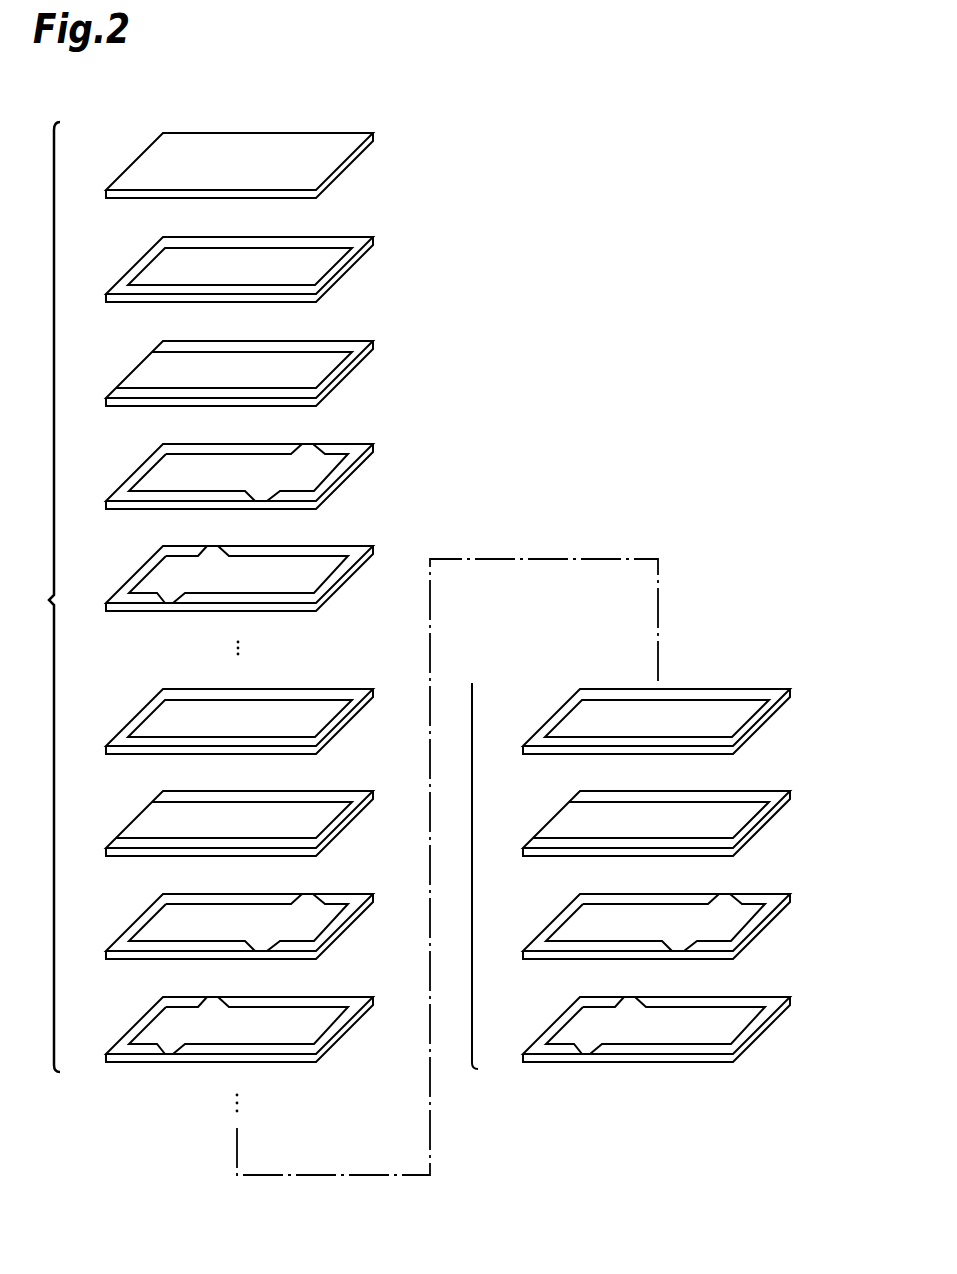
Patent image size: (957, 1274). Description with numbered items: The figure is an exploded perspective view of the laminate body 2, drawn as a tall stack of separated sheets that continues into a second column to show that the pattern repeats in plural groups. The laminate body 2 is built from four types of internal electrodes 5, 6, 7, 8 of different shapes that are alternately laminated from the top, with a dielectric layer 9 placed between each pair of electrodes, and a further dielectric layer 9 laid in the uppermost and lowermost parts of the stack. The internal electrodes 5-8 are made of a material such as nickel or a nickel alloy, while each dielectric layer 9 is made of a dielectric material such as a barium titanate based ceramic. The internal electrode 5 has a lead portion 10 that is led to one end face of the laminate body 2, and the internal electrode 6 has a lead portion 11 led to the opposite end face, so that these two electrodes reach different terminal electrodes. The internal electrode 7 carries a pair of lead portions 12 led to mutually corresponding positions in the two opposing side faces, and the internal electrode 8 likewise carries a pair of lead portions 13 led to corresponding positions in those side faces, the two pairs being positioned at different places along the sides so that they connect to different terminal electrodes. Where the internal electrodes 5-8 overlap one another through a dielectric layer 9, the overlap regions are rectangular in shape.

The laminate body 2 is at (44, 597).
The internal electrode 5 is at (167, 265).
The internal electrode 6 is at (167, 363).
The internal electrode 7 is at (167, 473).
The internal electrode 8 is at (167, 577).
The dielectric layer 9 is at (348, 137).
The lead portion 10 is at (337, 265).
The lead portion 11 is at (140, 363).
The lead portions 12 is at (310, 448).
The lead portions 13 is at (215, 550).